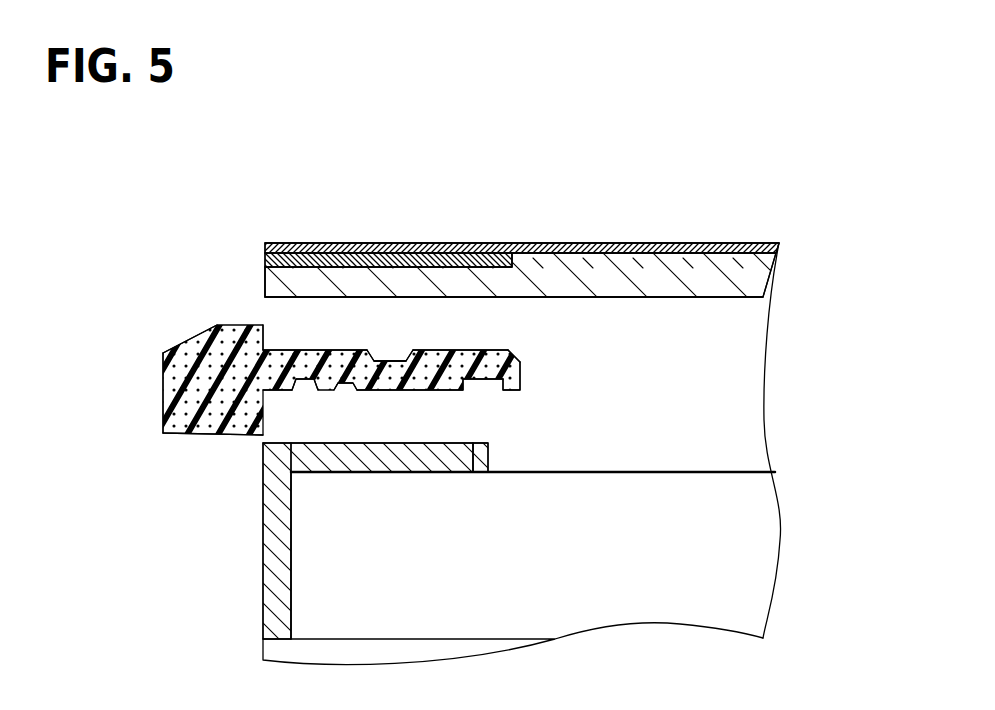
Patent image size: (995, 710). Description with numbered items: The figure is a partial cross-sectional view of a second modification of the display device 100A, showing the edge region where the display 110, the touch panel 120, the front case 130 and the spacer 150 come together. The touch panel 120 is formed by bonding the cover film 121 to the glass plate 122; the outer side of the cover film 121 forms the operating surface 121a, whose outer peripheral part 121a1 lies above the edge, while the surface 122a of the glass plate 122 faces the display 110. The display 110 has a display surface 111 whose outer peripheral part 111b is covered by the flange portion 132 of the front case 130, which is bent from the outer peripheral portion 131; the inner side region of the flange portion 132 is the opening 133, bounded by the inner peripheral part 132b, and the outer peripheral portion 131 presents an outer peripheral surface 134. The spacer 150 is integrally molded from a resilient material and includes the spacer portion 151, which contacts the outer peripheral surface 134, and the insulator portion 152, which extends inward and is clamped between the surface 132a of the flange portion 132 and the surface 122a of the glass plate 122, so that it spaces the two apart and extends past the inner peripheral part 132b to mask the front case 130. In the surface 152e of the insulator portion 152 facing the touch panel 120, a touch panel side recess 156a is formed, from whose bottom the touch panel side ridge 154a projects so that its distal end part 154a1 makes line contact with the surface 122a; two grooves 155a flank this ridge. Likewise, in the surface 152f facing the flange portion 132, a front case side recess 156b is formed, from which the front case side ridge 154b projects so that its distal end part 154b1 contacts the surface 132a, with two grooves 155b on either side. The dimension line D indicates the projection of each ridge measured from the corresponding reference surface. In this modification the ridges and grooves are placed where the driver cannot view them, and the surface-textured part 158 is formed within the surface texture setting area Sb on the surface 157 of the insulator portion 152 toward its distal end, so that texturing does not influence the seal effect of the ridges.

The display device 100A is at (313, 226).
The display 110 is at (568, 532).
The display surface 111 is at (727, 472).
The outer peripheral part of the display surface 111b is at (400, 457).
The touch panel 120 is at (849, 240).
The cover film 121 is at (770, 250).
The operating surface 121a is at (727, 243).
The outer peripheral part of the operating surface 121a1 is at (368, 243).
The glass plate 122 is at (745, 280).
The surface of the glass plate 122a is at (466, 297).
The front case 130 is at (150, 508).
The outer peripheral portion 131 is at (275, 527).
The flange portion 132 is at (358, 457).
The surface of the flange portion 132a is at (487, 443).
The inner peripheral part of the front case 132b is at (492, 438).
The opening 133 is at (492, 455).
The outer peripheral surface of the outer peripheral portion 134 is at (263, 612).
The spacer 150 is at (84, 337).
The spacer portion 151 is at (172, 372).
The insulator portion 152 is at (222, 385).
The surface of the insulator portion opposed to the touch panel 152e is at (288, 348).
The surface of the insulator portion opposed to the flange portion 152f is at (310, 367).
The touch panel side ridge 154a is at (386, 392).
The distal end part of the touch panel side ridge 154a1 is at (425, 361).
The front case side ridge 154b is at (310, 349).
The distal end part of the front case side ridge 154b1 is at (322, 393).
The grooves 155a is at (330, 350).
The grooves 155b is at (349, 389).
The touch panel side recess 156a is at (393, 362).
The front case side recess 156b is at (290, 392).
The surface of the insulator portion 157 is at (523, 358).
The surface-textured part 158 is at (524, 375).
The dimension line D is at (445, 330).
The surface texture setting area Sb is at (500, 348).